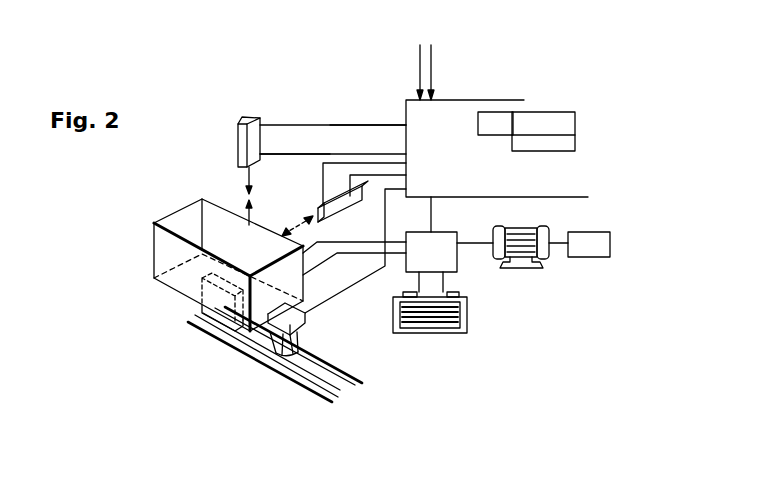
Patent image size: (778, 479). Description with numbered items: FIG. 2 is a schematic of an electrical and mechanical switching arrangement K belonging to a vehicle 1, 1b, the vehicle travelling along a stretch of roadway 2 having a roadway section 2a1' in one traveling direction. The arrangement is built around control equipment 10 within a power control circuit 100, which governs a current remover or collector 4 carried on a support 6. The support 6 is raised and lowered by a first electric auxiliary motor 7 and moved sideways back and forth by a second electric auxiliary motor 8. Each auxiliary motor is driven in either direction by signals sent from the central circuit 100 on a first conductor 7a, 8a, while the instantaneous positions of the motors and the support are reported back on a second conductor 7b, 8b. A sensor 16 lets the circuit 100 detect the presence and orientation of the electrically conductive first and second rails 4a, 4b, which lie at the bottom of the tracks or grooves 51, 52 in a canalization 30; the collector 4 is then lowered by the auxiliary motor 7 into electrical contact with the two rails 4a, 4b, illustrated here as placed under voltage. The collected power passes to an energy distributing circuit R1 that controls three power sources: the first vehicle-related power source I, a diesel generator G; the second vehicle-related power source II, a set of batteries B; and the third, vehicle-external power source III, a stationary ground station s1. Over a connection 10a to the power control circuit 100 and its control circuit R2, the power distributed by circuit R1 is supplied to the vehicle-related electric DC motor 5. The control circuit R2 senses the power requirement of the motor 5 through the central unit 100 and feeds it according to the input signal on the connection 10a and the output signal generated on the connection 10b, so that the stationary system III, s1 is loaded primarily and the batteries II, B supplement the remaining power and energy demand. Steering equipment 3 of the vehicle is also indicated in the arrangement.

The vehicle 1 is at (265, 108).
The truck 1b is at (303, 106).
The first electric auxiliary motor 7 is at (238, 136).
The first conductor 7a is at (343, 153).
The second conductor 7b is at (381, 124).
The connection 10a is at (404, 72).
The power control circuit 100 is at (478, 98).
The steering equipment 3 is at (502, 127).
The control circuit for energy distribution R2 is at (557, 110).
The control equipment 10 is at (568, 145).
The first conductor 8a is at (323, 180).
The second conductor 8b is at (389, 176).
The second electric auxiliary motor 8 is at (315, 212).
The sensor 16 is at (306, 320).
The support 6 is at (217, 233).
The current collector 4 is at (202, 314).
The connection 10b is at (432, 222).
The energy distributing circuit R1 is at (458, 266).
The electric motor 5 is at (513, 232).
The roadway 2 is at (198, 327).
The first rail 4a is at (255, 352).
The canalization 30 is at (290, 373).
The second rail 4b is at (328, 373).
The first groove 51 is at (315, 431).
The second groove 52 is at (346, 431).
The roadway section 2a1' is at (389, 409).
The first vehicle-related power source I is at (433, 57).
The second vehicle-related power source II is at (430, 356).
The third power source III is at (204, 363).
The diesel generator G is at (418, 38).
The switching arrangement K is at (172, 193).
The set of batteries B is at (467, 313).
The stationary station s1 is at (310, 365).